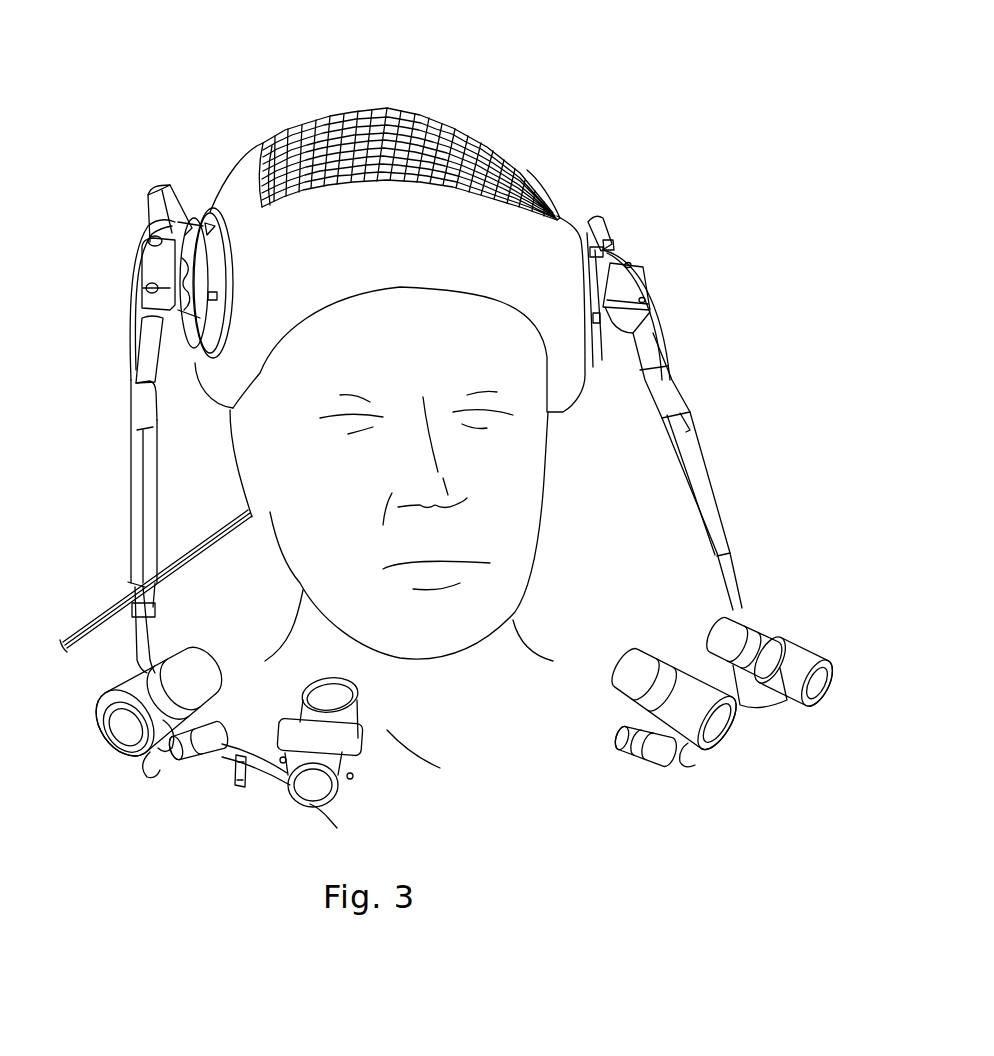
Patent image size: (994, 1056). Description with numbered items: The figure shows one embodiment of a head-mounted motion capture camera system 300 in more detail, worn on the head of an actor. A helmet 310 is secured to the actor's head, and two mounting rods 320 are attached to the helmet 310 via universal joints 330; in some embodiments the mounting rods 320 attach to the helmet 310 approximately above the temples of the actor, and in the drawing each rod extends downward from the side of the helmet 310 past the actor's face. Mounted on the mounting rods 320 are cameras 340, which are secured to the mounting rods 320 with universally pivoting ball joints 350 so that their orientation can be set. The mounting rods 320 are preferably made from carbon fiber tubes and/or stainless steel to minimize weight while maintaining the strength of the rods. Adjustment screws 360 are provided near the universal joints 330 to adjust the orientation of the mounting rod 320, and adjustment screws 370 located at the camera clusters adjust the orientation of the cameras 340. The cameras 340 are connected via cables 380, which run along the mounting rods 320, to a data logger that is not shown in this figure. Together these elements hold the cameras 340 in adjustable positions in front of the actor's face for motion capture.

The head-mounted motion capture camera system 300 is at (567, 62).
The helmet 310 is at (538, 181).
The mounting rods 320 is at (683, 462).
The universal joints 330 is at (210, 212).
The cameras 340 is at (125, 707).
The universally pivoting ball joints 350 is at (163, 765).
The adjustment screws 360 is at (150, 242).
The adjustment screws 370 is at (207, 750).
The cables 380 is at (660, 333).